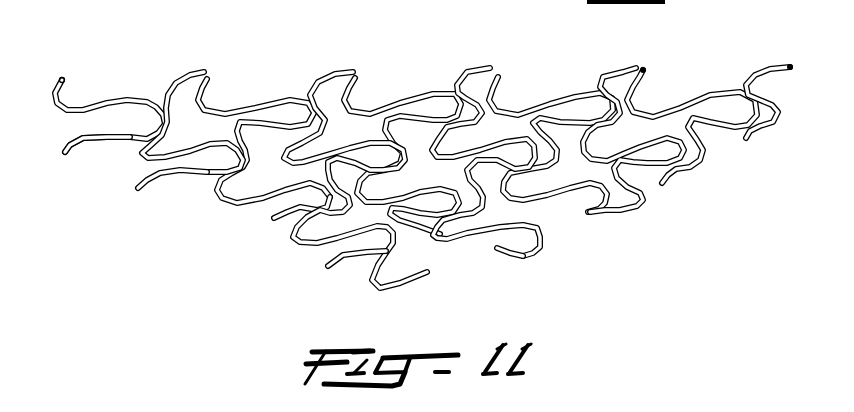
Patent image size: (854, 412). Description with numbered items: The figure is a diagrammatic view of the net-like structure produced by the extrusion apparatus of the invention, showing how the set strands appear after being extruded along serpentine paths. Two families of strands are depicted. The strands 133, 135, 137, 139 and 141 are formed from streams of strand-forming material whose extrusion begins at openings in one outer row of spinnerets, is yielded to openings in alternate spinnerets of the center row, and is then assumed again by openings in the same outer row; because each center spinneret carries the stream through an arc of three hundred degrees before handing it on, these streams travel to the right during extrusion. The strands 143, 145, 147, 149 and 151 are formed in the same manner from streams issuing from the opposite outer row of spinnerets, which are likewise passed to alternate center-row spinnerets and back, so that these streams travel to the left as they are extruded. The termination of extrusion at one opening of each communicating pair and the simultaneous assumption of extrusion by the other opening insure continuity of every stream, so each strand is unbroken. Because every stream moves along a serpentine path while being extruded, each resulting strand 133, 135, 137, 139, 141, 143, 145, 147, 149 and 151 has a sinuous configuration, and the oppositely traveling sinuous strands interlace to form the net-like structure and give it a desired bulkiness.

The strand 133 is at (73, 102).
The strand 135 is at (200, 100).
The strand 137 is at (352, 92).
The strand 139 is at (490, 92).
The strand 141 is at (641, 90).
The strand 143 is at (100, 140).
The strand 145 is at (155, 175).
The strand 147 is at (270, 216).
The strand 149 is at (320, 257).
The strand 151 is at (511, 251).